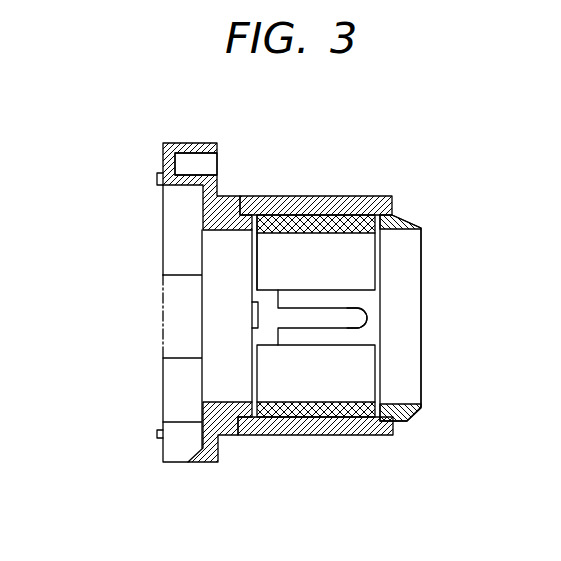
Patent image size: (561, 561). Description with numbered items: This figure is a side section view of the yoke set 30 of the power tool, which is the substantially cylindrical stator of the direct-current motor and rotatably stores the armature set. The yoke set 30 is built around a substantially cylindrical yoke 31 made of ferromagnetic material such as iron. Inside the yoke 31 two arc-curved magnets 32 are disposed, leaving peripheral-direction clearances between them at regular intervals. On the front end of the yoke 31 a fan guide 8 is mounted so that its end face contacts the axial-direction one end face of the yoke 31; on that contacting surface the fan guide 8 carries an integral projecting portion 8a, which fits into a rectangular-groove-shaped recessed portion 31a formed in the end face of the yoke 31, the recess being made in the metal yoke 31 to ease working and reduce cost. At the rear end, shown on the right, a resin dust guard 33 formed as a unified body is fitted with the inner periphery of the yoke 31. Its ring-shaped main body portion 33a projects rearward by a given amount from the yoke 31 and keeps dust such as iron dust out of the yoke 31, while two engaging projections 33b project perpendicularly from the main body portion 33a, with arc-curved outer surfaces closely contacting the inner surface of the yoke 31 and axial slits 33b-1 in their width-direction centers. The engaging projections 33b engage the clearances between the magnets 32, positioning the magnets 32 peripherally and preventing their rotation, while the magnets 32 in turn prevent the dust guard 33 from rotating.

The fan guide 8 is at (218, 162).
The projecting portion 8a is at (257, 305).
The yoke set 30 is at (376, 168).
The yoke 31 is at (355, 427).
The recessed portion 31a is at (252, 326).
The magnet 32 is at (360, 234).
The dust guard 33 is at (414, 421).
The main body portion 33a is at (413, 243).
The engaging projection 33b is at (297, 338).
The slit 33b-1 is at (367, 317).